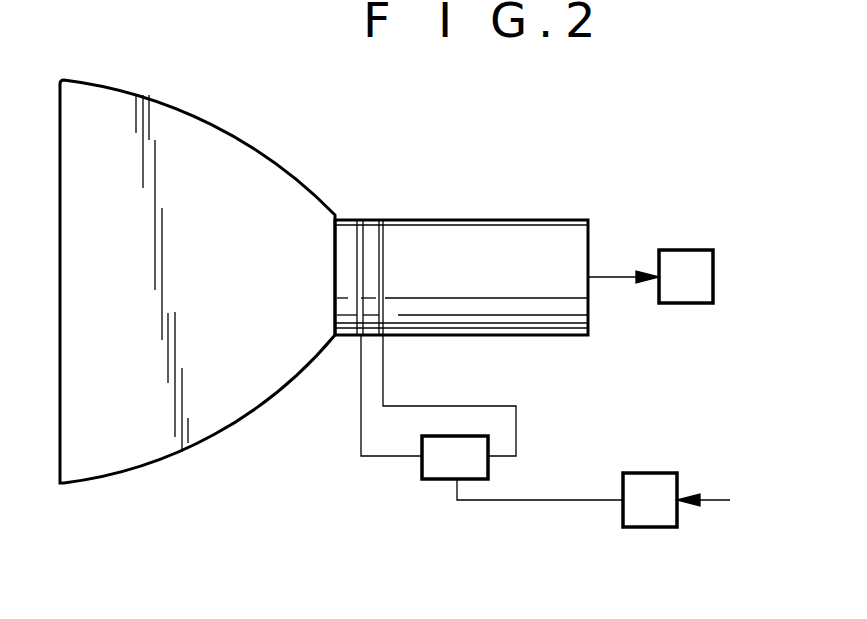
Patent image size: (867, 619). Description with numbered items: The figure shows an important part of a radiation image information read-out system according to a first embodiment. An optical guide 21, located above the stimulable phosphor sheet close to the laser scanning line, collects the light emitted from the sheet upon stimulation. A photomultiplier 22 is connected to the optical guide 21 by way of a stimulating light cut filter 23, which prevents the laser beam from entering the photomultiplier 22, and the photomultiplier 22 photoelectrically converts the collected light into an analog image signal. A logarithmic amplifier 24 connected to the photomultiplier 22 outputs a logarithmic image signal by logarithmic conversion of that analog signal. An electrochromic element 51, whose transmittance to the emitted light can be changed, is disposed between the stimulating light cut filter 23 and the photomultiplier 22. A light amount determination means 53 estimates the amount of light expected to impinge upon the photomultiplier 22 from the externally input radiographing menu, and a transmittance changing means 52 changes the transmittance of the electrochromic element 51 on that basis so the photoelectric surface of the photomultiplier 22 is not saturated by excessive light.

The optical guide 21 is at (258, 170).
The photomultiplier 22 is at (533, 240).
The stimulating light cut filter 23 is at (345, 272).
The logarithmic amplifier 24 is at (690, 250).
The electrochromic element 51 is at (370, 285).
The transmittance changing means 52 is at (435, 465).
The light amount determination means 53 is at (643, 527).